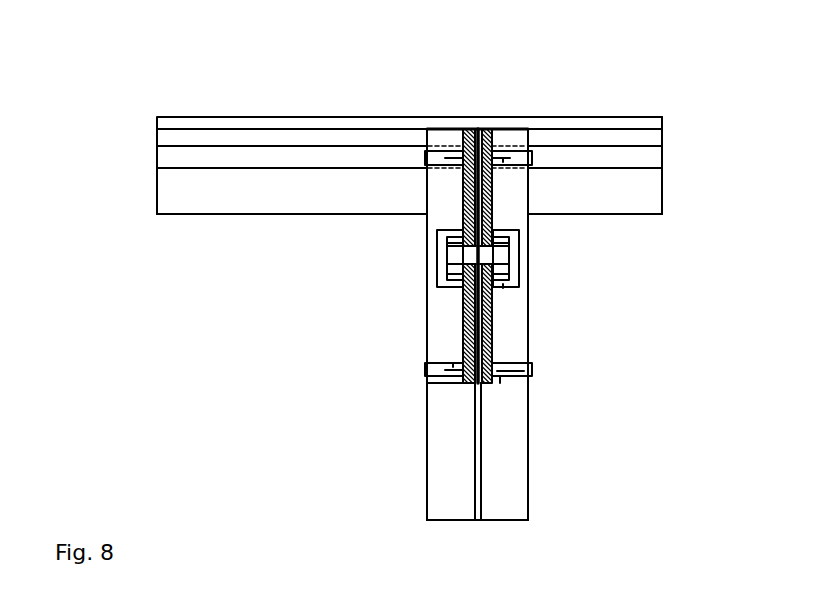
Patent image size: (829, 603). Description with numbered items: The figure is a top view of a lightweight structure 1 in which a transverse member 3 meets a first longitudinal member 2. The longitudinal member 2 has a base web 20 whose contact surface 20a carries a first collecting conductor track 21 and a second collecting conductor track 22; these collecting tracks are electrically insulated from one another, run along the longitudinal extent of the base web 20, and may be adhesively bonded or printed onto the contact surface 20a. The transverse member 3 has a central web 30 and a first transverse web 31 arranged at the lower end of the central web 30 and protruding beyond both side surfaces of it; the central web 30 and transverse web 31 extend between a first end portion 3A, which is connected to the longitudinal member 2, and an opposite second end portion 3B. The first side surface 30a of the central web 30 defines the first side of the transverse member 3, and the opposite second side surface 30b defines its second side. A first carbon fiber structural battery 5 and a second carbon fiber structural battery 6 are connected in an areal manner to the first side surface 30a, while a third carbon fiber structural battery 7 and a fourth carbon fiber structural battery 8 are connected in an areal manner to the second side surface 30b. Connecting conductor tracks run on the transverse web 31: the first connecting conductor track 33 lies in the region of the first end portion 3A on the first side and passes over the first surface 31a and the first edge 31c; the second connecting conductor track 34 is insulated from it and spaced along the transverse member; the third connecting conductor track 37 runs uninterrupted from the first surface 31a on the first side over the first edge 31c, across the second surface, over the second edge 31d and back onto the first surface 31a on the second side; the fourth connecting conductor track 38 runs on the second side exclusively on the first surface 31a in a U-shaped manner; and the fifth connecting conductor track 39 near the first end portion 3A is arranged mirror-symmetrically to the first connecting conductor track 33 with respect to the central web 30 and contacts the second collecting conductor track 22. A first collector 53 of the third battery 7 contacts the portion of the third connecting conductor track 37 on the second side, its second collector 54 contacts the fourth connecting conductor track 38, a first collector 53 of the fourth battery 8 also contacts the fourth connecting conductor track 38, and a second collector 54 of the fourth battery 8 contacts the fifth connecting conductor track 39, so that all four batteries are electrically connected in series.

The lightweight structure 1 is at (220, 381).
The first longitudinal member 2 is at (227, 95).
The transverse member 3 is at (388, 477).
The first end portion 3A is at (452, 113).
The second end portion 3B is at (405, 511).
The first carbon fiber structural battery 5 is at (492, 140).
The second carbon fiber structural battery 6 is at (492, 333).
The third carbon fiber structural battery 7 is at (463, 325).
The fourth carbon fiber structural battery 8 is at (463, 197).
The base web 20 is at (157, 198).
The contact surface 20a is at (228, 185).
The first collecting conductor track 21 is at (650, 158).
The second collecting conductor track 22 is at (157, 155).
The central web 30 is at (478, 519).
The first side surface 30a is at (522, 490).
The second side surface 30b is at (463, 417).
The first transverse web 31 is at (500, 500).
The first surface 31a is at (449, 450).
The first edge 31c is at (545, 436).
The second edge 31d is at (410, 460).
The first connecting conductor track 33 is at (519, 152).
The second connecting conductor track 34 is at (516, 257).
The third connecting conductor track 37 is at (532, 370).
The fourth connecting conductor track 38 is at (438, 257).
The fifth connecting conductor track 39 is at (427, 158).
The first collector 53 is at (503, 160).
The second collector 54 is at (447, 157).